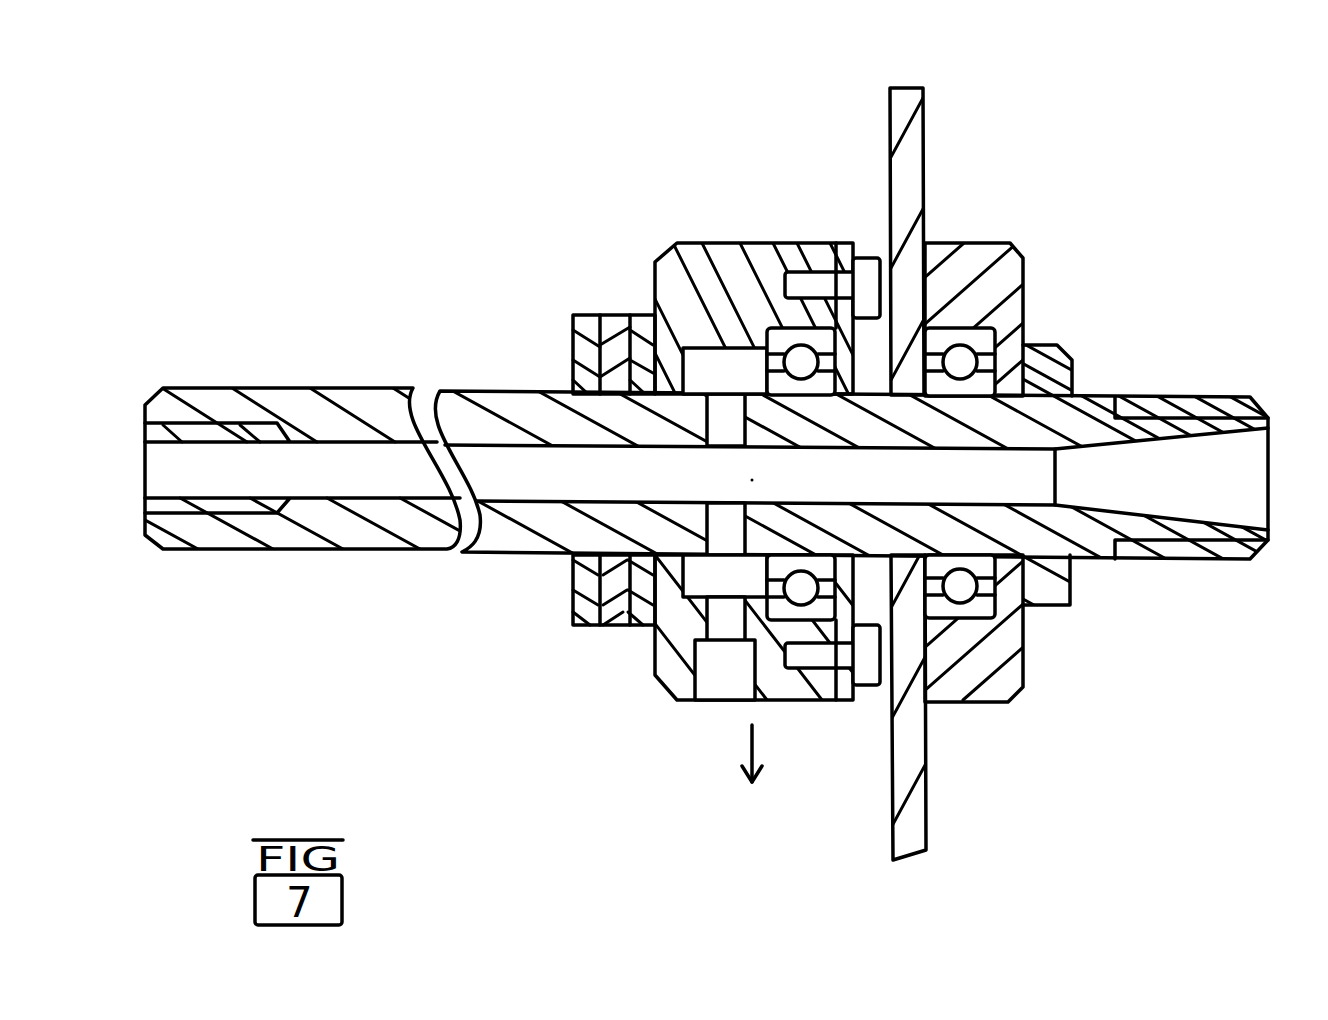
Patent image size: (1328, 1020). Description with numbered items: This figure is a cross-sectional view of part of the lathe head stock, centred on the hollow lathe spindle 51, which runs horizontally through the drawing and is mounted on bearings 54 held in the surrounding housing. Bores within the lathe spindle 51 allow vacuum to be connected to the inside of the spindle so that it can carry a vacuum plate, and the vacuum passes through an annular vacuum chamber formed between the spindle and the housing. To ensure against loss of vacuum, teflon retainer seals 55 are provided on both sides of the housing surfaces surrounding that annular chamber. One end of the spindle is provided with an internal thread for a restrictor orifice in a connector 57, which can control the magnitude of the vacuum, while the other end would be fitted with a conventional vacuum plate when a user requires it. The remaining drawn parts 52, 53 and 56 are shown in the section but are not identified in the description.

The lathe spindle 51 is at (1098, 386).
The collar seal 52 is at (587, 327).
The left bearing housing 53 is at (712, 243).
The bearings 54 is at (800, 330).
The teflon retainer seals 55 is at (850, 352).
The hollow shaft 56 is at (232, 512).
The connector 57 is at (706, 702).